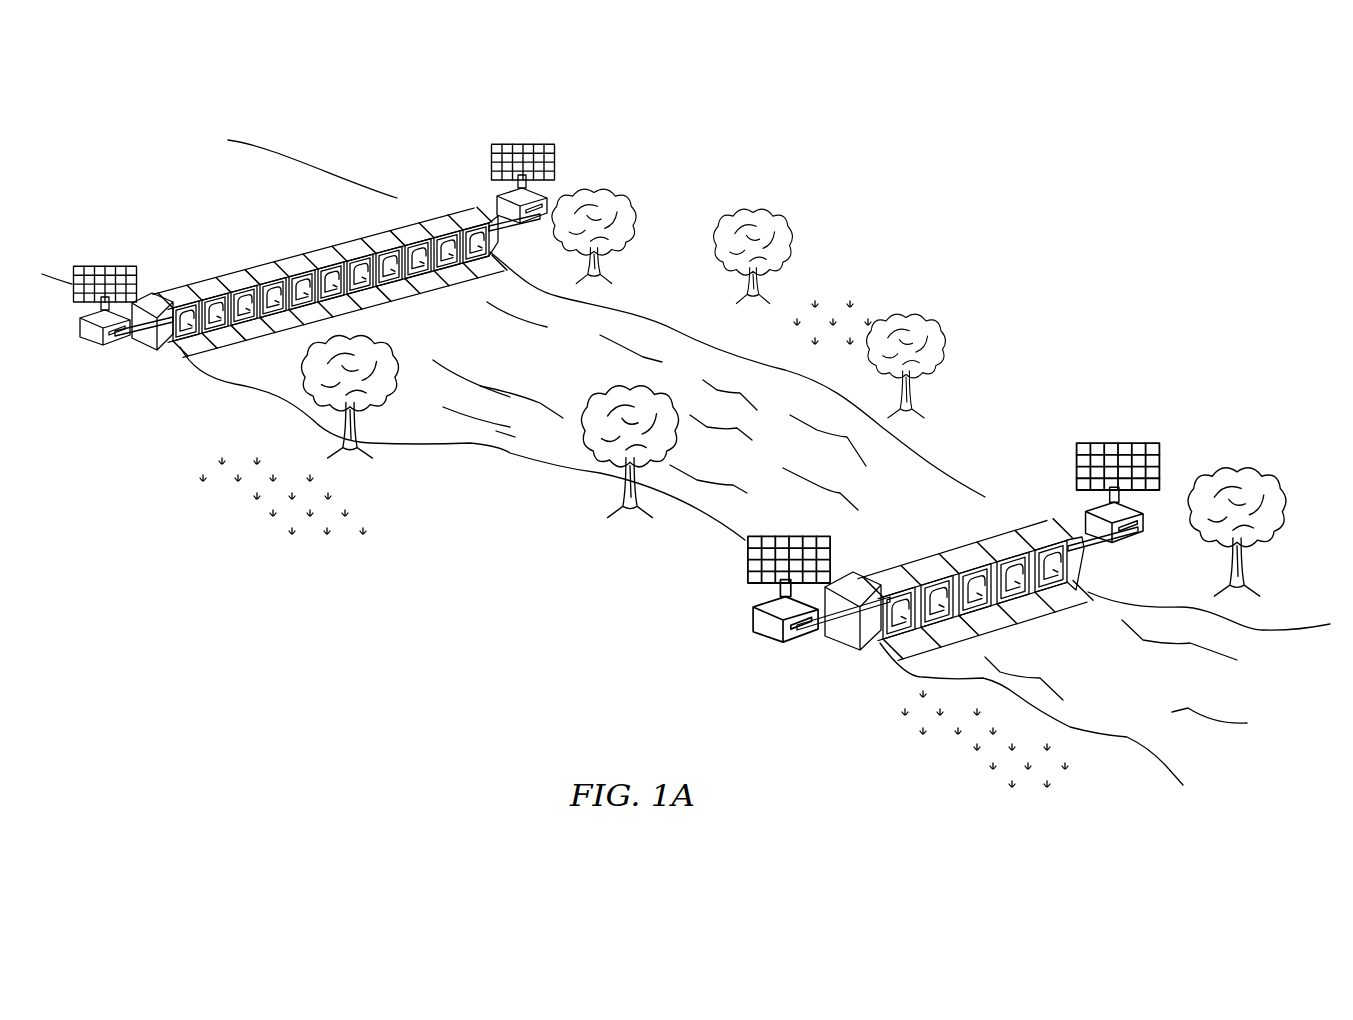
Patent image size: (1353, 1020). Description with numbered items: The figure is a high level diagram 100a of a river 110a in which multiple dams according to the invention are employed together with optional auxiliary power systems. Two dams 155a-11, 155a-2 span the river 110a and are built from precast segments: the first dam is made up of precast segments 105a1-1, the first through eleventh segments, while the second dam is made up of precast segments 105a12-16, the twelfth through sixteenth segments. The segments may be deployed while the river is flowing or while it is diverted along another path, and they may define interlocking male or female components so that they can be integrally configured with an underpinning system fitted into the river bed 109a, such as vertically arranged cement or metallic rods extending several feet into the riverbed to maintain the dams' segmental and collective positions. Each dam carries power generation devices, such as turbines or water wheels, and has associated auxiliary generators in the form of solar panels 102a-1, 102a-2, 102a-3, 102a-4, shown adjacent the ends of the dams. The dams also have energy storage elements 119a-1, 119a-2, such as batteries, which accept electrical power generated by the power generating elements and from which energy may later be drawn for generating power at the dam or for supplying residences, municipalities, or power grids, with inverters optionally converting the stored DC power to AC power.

The high level diagram 100a is at (943, 127).
The solar panel 102a-1 is at (105, 262).
The solar panel 102a-2 is at (520, 142).
The solar panel 102a-3 is at (748, 560).
The solar panel 102a-4 is at (1110, 442).
The precast segments 105a1-1 is at (440, 198).
The precast segments 105a12-16 is at (1023, 500).
The dam 155a-11 is at (208, 360).
The dam 155a-2 is at (1055, 639).
The energy storage element 119a-1 is at (847, 632).
The energy storage element 119a-2 is at (150, 342).
The river bed 109a is at (563, 469).
The river 110a is at (430, 425).